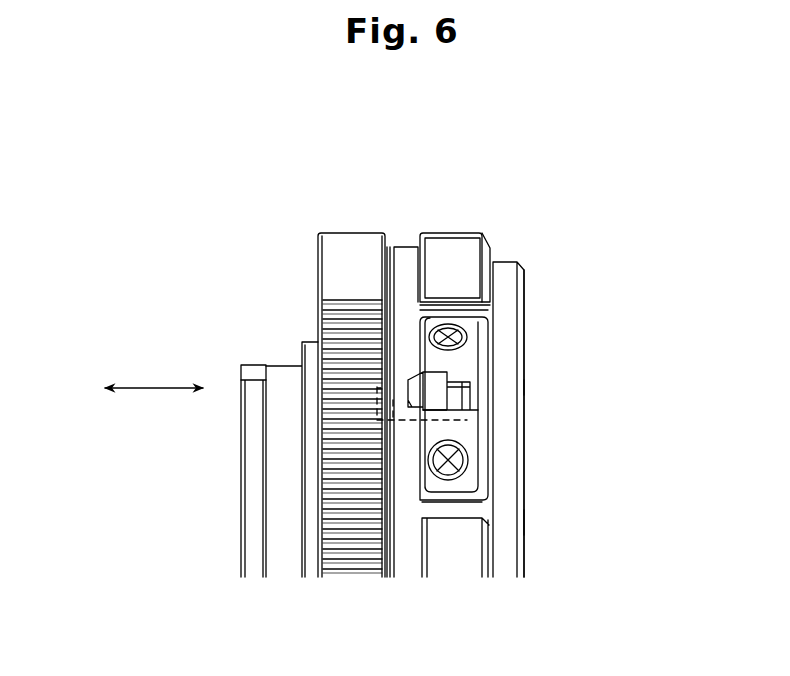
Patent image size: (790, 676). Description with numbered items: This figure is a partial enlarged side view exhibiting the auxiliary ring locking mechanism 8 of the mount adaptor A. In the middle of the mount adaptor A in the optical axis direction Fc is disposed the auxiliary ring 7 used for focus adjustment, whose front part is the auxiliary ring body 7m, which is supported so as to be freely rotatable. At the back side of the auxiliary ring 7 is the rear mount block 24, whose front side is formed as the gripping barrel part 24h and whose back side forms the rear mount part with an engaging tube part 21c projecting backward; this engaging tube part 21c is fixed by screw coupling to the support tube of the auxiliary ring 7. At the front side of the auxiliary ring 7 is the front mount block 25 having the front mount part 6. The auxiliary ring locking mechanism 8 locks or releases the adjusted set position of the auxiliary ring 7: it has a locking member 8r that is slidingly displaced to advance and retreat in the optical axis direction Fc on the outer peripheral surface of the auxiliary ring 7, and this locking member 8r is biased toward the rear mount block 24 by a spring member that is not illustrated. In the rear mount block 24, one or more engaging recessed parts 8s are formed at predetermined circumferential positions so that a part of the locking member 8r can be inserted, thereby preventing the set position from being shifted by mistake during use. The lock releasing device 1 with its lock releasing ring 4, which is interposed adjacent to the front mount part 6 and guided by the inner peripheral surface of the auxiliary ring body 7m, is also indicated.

The lock releasing device 1 is at (543, 386).
The lock releasing ring 4 is at (508, 262).
The front mount part 6 is at (538, 282).
The auxiliary ring 7 is at (458, 227).
The auxiliary ring body 7m is at (408, 238).
The auxiliary ring locking mechanism 8 is at (495, 388).
The locking member 8r is at (437, 410).
The engaging recessed part 8s is at (388, 400).
The engaging tube part 21c is at (285, 452).
The rear mount block 24 is at (263, 343).
The gripping barrel part 24h is at (318, 270).
The front mount block 25 is at (540, 522).
The mount adaptor A is at (297, 225).
The optical axis direction Fc is at (155, 388).